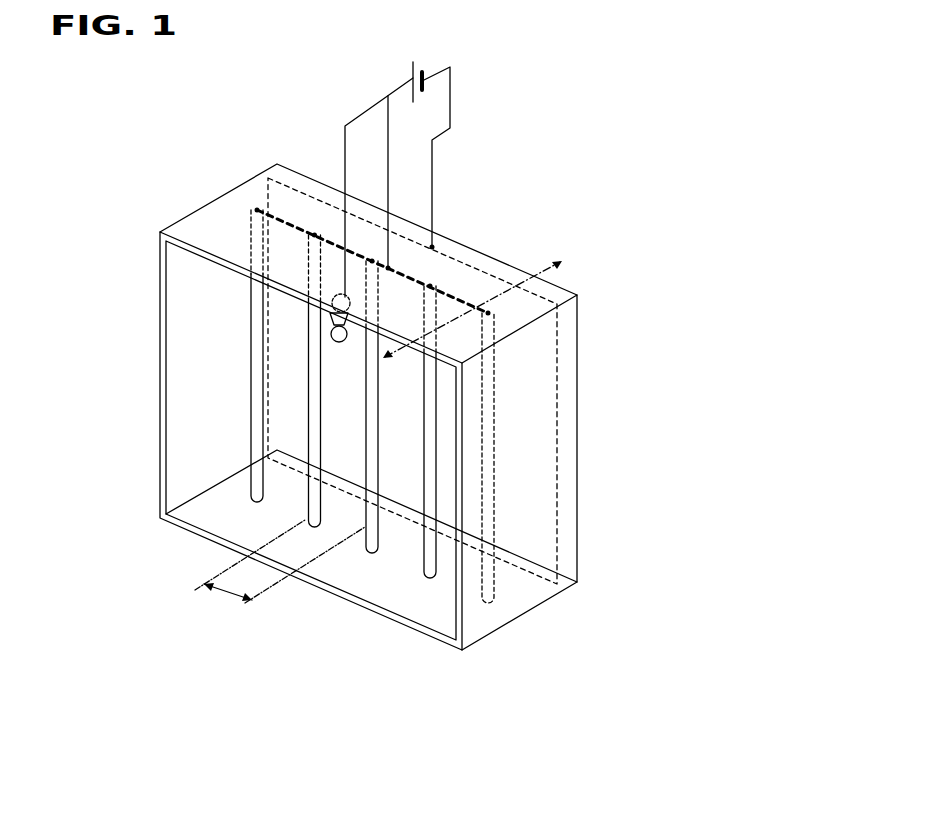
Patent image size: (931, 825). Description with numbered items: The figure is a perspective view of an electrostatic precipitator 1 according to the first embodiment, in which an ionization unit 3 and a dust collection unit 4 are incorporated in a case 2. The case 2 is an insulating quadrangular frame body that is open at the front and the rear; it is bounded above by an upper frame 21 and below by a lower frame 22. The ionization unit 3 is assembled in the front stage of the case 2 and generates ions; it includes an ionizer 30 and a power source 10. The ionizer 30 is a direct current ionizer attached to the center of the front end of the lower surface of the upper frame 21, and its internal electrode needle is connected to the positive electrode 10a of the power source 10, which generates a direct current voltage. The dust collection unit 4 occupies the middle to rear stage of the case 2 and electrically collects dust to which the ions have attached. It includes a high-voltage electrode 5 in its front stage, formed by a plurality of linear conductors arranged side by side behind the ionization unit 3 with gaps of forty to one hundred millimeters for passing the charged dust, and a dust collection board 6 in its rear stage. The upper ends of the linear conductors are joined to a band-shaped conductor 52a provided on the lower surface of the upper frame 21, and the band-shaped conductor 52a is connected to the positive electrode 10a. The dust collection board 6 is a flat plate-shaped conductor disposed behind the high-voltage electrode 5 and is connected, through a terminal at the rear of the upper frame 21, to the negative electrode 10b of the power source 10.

The electrostatic precipitator 1 is at (524, 188).
The case 2 is at (583, 290).
The upper frame 21 is at (210, 212).
The lower frame 22 is at (198, 515).
The ionization unit 3 is at (331, 345).
The ionizer 30 is at (320, 330).
The dust collection unit 4 is at (751, 643).
The high-voltage electrode 5 is at (422, 550).
The dust collection board 6 is at (560, 470).
The band-shaped conductor 52a is at (293, 212).
The power source 10 is at (416, 62).
The positive electrode 10a is at (406, 85).
The negative electrode 10b is at (440, 62).